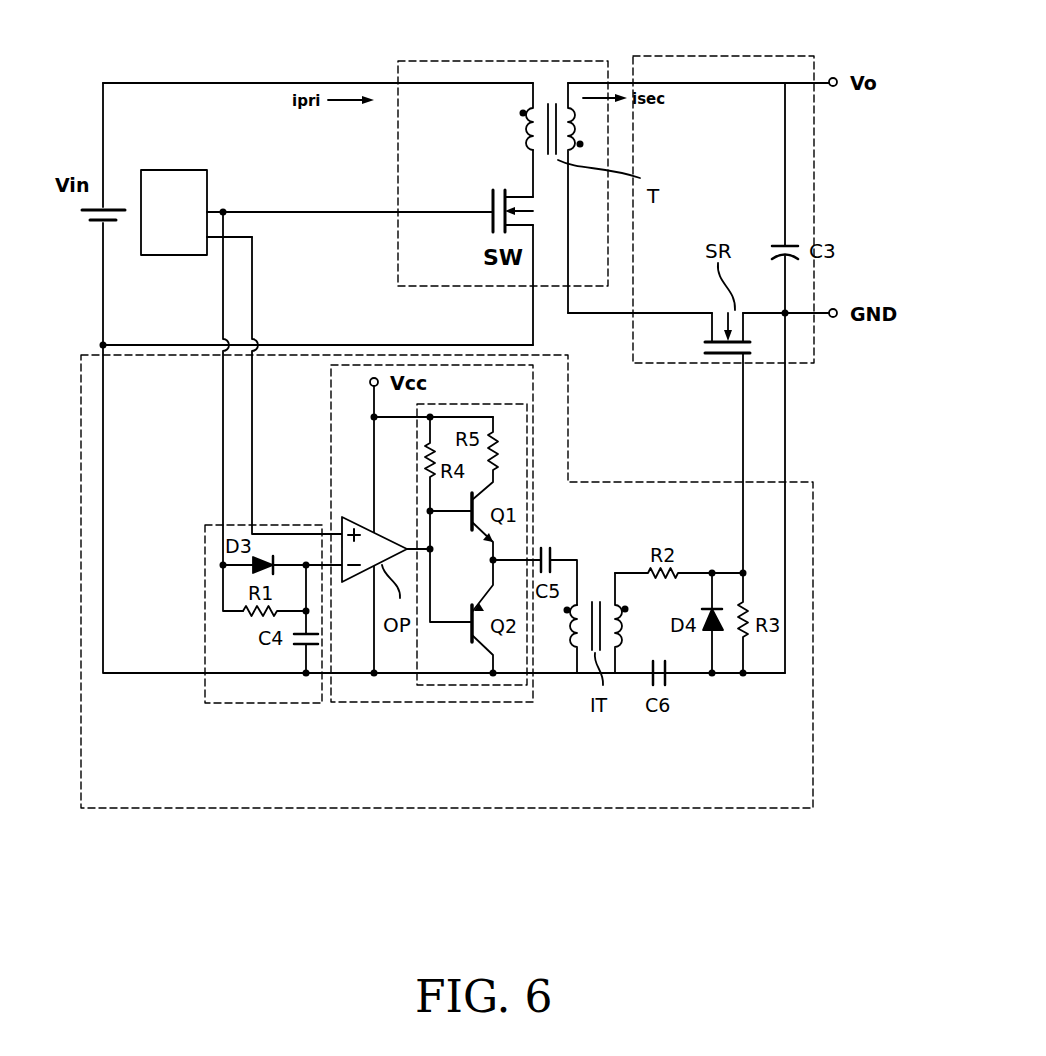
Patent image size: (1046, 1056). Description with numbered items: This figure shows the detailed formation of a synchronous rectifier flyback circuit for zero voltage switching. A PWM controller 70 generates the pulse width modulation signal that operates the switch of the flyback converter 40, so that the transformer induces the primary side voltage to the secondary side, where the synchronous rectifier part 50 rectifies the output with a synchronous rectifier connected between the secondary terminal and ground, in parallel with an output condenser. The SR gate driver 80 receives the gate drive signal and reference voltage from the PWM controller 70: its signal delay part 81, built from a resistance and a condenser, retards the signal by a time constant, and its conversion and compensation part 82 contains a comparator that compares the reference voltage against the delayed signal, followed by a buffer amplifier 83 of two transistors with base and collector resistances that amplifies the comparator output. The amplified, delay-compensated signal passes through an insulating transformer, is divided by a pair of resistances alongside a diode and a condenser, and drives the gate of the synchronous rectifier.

The flyback converter 40 is at (398, 162).
The synchronous rectifier part 50 is at (814, 193).
The PWM controller 70 is at (183, 257).
The SR gate driver 80 is at (407, 808).
The signal delay part 81 is at (250, 703).
The conversion and compensation part 82 is at (410, 703).
The buffer amplifier 83 is at (462, 685).